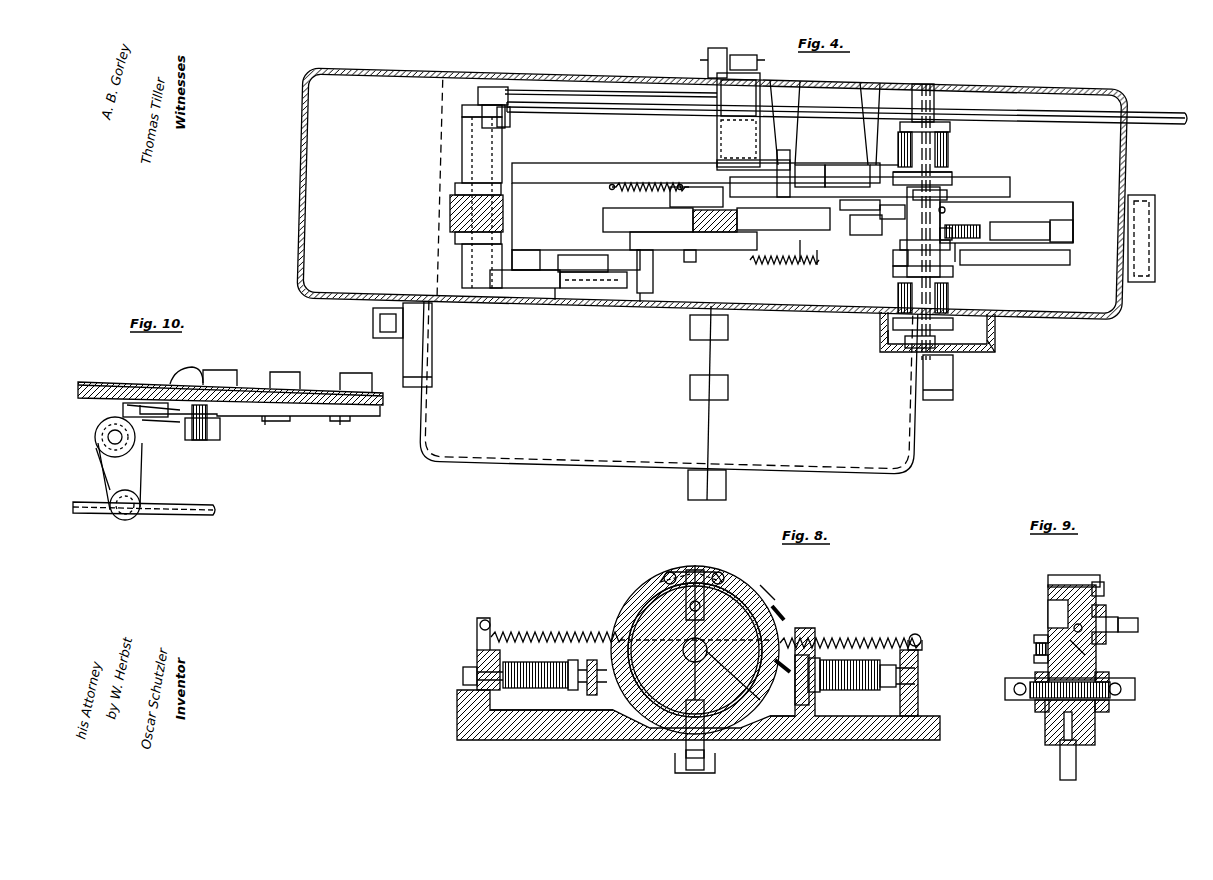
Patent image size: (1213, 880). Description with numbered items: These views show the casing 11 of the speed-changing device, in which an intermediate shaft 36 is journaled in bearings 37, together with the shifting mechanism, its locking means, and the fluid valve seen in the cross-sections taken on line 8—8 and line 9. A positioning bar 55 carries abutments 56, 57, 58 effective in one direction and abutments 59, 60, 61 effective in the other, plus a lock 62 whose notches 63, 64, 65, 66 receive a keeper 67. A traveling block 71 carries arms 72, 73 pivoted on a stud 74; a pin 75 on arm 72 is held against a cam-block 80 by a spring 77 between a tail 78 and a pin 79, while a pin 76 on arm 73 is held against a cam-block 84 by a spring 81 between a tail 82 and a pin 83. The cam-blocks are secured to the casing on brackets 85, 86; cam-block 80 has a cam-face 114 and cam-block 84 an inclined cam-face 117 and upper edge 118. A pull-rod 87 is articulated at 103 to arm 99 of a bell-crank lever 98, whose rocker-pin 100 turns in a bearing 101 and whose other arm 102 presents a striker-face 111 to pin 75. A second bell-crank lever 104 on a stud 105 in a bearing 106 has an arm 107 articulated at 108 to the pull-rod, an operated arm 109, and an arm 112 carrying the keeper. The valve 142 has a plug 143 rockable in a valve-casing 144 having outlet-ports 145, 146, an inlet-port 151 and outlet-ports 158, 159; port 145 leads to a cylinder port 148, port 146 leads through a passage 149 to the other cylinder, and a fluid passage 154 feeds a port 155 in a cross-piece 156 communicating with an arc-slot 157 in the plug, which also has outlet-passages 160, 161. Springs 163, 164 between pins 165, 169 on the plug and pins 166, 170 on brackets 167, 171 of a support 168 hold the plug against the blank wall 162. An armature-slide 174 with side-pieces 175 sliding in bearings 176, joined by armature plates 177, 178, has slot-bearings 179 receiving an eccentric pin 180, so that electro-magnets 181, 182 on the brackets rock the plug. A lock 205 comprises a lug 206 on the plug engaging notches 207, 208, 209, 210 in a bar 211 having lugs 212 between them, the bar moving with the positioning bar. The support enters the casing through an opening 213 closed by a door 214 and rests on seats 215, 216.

In FIG. 4, the section line 8— 8 is at (920, 77).
In FIG. 8, the section line 9 is at (708, 556).
In FIG. 4, the casing 11 is at (1003, 96).
In FIG. 4, the intermediate shaft 36 is at (956, 386).
In FIG. 4, the bearings 37 is at (410, 387).
In FIG. 4, the positioning bar 55 is at (696, 206).
In FIG. 10, the positioning bar 55 is at (170, 382).
In FIG. 4, the abutment 56 is at (654, 272).
In FIG. 4, the abutment 57 is at (600, 262).
In FIG. 4, the abutment 58 is at (526, 260).
In FIG. 4, the abutment 59 is at (860, 205).
In FIG. 10, the abutment 59 is at (225, 370).
In FIG. 4, the abutment 60 is at (888, 211).
In FIG. 10, the abutment 60 is at (285, 372).
In FIG. 4, the abutment 61 is at (1000, 186).
In FIG. 10, the abutment 61 is at (350, 373).
In FIG. 10, the lock 62 is at (312, 418).
In FIG. 10, the notch 63 is at (140, 428).
In FIG. 10, the notch 64 is at (220, 418).
In FIG. 10, the notch 65 is at (275, 429).
In FIG. 10, the notch 66 is at (349, 429).
In FIG. 10, the keeper 67 is at (205, 440).
In FIG. 4, the traveling block 71 is at (730, 221).
In FIG. 4, the arm 72 is at (690, 262).
In FIG. 4, the arm 73 is at (700, 187).
In FIG. 4, the stud 74 is at (712, 252).
In FIG. 4, the pin 75 is at (645, 302).
In FIG. 4, the pin 76 is at (782, 150).
In FIG. 4, the spring 77 is at (800, 262).
In FIG. 4, the tail 78 is at (784, 266).
In FIG. 4, the pin 79 is at (826, 262).
In FIG. 4, the cam-block 80 is at (580, 300).
In FIG. 4, the spring 81 is at (614, 182).
In FIG. 4, the tail 82 is at (678, 182).
In FIG. 4, the pin 83 is at (606, 194).
In FIG. 4, the cam-block 84 is at (848, 165).
In FIG. 4, the bracket 85 is at (593, 287).
In FIG. 4, the bracket 86 is at (825, 122).
In FIG. 4, the pull-rod 87 is at (610, 108).
In FIG. 10, the pull-rod 87 is at (195, 515).
In FIG. 4, the bell-crank lever 98 is at (504, 158).
In FIG. 4, the arm 99 is at (510, 124).
In FIG. 4, the rocker-pin 100 is at (462, 110).
In FIG. 4, the bearing 101 is at (450, 220).
In FIG. 4, the arm 102 is at (507, 260).
In FIG. 4, the articulation 103 is at (500, 87).
In FIG. 4, the bell-crank lever 104 is at (717, 136).
In FIG. 10, the bell-crank lever 104 is at (100, 446).
In FIG. 4, the stud 105 is at (732, 55).
In FIG. 10, the stud 105 is at (98, 432).
In FIG. 4, the bearing 106 is at (715, 92).
In FIG. 10, the arm 107 is at (117, 469).
In FIG. 10, the articulation 108 is at (120, 520).
In FIG. 4, the operated arm 109 is at (753, 159).
In FIG. 10, the operated arm 109 is at (188, 370).
In FIG. 4, the striker-face 111 is at (700, 320).
In FIG. 10, the arm 112 is at (149, 418).
In FIG. 4, the cam-face 114 is at (570, 255).
In FIG. 4, the inclined cam-face 117 is at (895, 160).
In FIG. 4, the upper edge 118 is at (810, 165).
In FIG. 4, the valve 142 is at (960, 255).
In FIG. 8, the valve 142 is at (770, 604).
In FIG. 8, the valve-plug 143 is at (660, 572).
In FIG. 9, the valve-plug 143 is at (1048, 610).
In FIG. 8, the valve-casing 144 is at (776, 632).
In FIG. 9, the valve-casing 144 is at (1078, 750).
In FIG. 8, the outlet-port 145 is at (668, 570).
In FIG. 8, the outlet-port 146 is at (726, 576).
In FIG. 4, the port 148 is at (944, 242).
In FIG. 4, the passage 149 is at (948, 208).
In FIG. 9, the passage 149 is at (1100, 582).
In FIG. 8, the inlet-port 151 is at (707, 566).
In FIG. 9, the inlet-port 151 is at (1098, 645).
In FIG. 4, the fluid passage 154 is at (986, 220).
In FIG. 9, the fluid passage 154 is at (1138, 622).
In FIG. 9, the port 155 is at (1118, 620).
In FIG. 9, the cross-piece 156 is at (1105, 608).
In FIG. 9, the arc-slot 157 is at (1110, 620).
In FIG. 4, the outlet-port 158 is at (895, 262).
In FIG. 8, the outlet-port 158 is at (630, 600).
In FIG. 4, the outlet-port 159 is at (952, 178).
In FIG. 8, the outlet-port 159 is at (778, 618).
In FIG. 9, the outlet-port 159 is at (1052, 604).
In FIG. 8, the outlet-passage 160 is at (640, 615).
In FIG. 8, the outlet-passage 161 is at (780, 608).
In FIG. 9, the outlet-passage 161 is at (1095, 655).
In FIG. 8, the blank wall 162 is at (695, 568).
In FIG. 4, the spring 163 is at (893, 325).
In FIG. 8, the spring 163 is at (530, 634).
In FIG. 4, the spring 164 is at (905, 170).
In FIG. 8, the spring 164 is at (850, 640).
In FIG. 9, the spring 164 is at (1036, 645).
In FIG. 8, the pin 165 is at (552, 730).
In FIG. 8, the pin 166 is at (488, 618).
In FIG. 4, the bracket 167 is at (935, 337).
In FIG. 8, the bracket 167 is at (478, 660).
In FIG. 8, the support 168 is at (553, 730).
In FIG. 8, the pin 169 is at (790, 728).
In FIG. 9, the pin 169 is at (1034, 658).
In FIG. 8, the pin 170 is at (917, 634).
In FIG. 9, the pin 170 is at (1040, 634).
In FIG. 4, the bracket 171 is at (945, 100).
In FIG. 8, the bracket 171 is at (918, 660).
In FIG. 8, the armature-slide 174 is at (600, 692).
In FIG. 4, the side-pieces 175 is at (905, 245).
In FIG. 8, the side-pieces 175 is at (808, 673).
In FIG. 9, the side-pieces 175 is at (1110, 696).
In FIG. 9, the bearings 176 is at (1108, 712).
In FIG. 4, the armature plate 177 is at (953, 277).
In FIG. 8, the armature plate 177 is at (591, 668).
In FIG. 4, the armature plate 178 is at (947, 190).
In FIG. 8, the armature plate 178 is at (800, 702).
In FIG. 9, the armature plate 178 is at (1115, 708).
In FIG. 8, the slot-bearing 179 is at (740, 730).
In FIG. 9, the slot-bearing 179 is at (1135, 688).
In FIG. 8, the pin 180 is at (682, 722).
In FIG. 9, the pin 180 is at (1095, 720).
In FIG. 4, the electro-magnets 181 is at (923, 298).
In FIG. 8, the electro-magnets 181 is at (540, 666).
In FIG. 4, the electro-magnets 182 is at (923, 149).
In FIG. 8, the electro-magnets 182 is at (844, 667).
In FIG. 8, the lock 205 is at (725, 769).
In FIG. 8, the lug 206 is at (708, 735).
In FIG. 9, the lug 206 is at (1064, 762).
In FIG. 4, the notch 207 is at (783, 219).
In FIG. 4, the notch 208 is at (866, 225).
In FIG. 8, the notch 208 is at (686, 758).
In FIG. 4, the notch 209 is at (1020, 231).
In FIG. 4, the notch 210 is at (1060, 236).
In FIG. 4, the bar 211 is at (1050, 225).
In FIG. 4, the lugs 212 is at (1042, 264).
In FIG. 4, the opening 213 is at (990, 344).
In FIG. 4, the door 214 is at (992, 352).
In FIG. 4, the seat 215 is at (890, 340).
In FIG. 4, the seat 216 is at (940, 120).